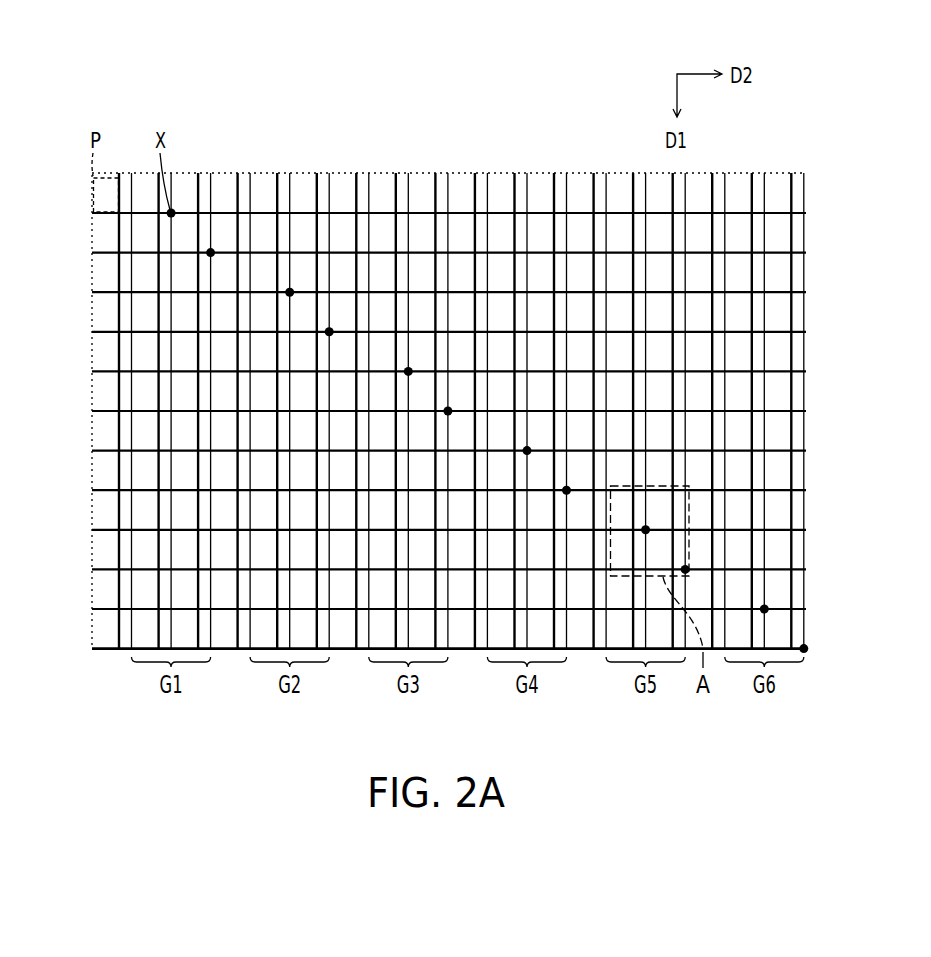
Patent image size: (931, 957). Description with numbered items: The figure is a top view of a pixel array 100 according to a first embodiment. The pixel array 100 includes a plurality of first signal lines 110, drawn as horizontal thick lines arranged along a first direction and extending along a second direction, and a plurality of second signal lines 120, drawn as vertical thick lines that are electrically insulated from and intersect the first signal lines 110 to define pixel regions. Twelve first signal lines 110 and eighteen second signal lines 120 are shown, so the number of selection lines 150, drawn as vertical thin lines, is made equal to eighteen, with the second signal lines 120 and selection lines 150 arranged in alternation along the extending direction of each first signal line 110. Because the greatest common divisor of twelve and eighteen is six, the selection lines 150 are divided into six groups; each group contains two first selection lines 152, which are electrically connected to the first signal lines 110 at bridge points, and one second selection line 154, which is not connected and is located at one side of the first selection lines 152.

The pixel array 100 is at (733, 738).
The first signal lines 110 is at (82, 217).
The second signal lines 120 is at (124, 165).
The selection lines 150 is at (466, 359).
The first selection lines 152 is at (215, 165).
The second selection line 154 is at (136, 165).